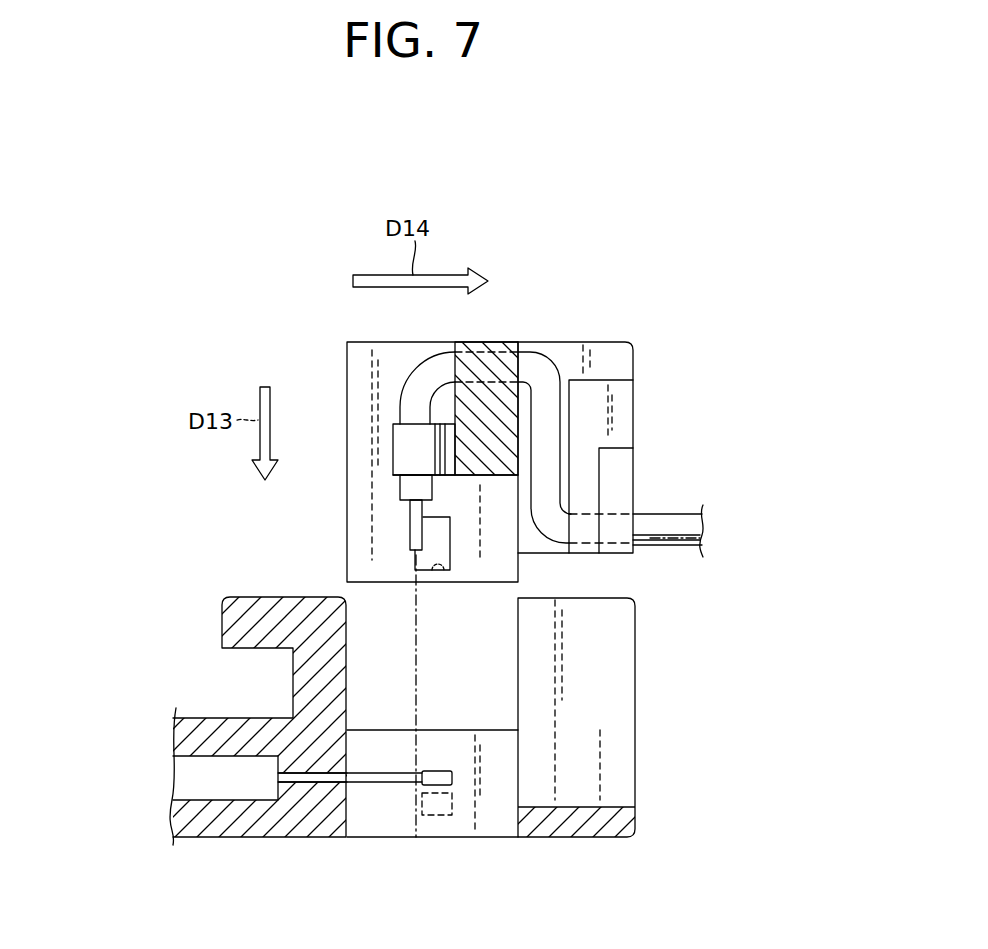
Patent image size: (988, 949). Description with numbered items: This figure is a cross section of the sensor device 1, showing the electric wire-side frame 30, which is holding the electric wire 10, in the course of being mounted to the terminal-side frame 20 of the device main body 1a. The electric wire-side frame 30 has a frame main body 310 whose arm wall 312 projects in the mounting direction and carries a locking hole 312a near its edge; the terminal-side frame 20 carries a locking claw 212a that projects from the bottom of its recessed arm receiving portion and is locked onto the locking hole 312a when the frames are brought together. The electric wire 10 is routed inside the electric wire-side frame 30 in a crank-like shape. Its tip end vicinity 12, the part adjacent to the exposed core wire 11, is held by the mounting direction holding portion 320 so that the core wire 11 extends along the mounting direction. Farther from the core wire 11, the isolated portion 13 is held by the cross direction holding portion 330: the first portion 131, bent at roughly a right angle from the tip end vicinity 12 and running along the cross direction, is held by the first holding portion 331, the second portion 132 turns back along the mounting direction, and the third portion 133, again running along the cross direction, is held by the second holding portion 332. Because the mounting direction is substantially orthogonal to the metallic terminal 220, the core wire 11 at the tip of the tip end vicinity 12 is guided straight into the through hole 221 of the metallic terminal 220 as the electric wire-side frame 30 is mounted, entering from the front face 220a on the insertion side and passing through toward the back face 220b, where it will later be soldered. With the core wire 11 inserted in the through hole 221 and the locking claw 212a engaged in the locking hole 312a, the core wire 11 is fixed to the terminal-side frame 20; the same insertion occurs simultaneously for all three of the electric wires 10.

The sensor device 1 is at (343, 162).
The device main body 1a is at (164, 492).
The electric wire 10 is at (682, 513).
The core wire 11 is at (407, 527).
The tip end vicinity 12 is at (410, 413).
The isolated portion 13 is at (559, 359).
The first portion 131 is at (528, 350).
The second portion 132 is at (562, 418).
The third portion 133 is at (638, 513).
The terminal-side frame 20 is at (247, 838).
The electric wire-side frame 30 is at (639, 422).
The frame main body 310 is at (622, 342).
The arm wall 312 is at (345, 352).
The locking hole 312a is at (445, 572).
The mounting direction holding portion 320 is at (405, 453).
The cross direction holding portion 330 is at (423, 406).
The first holding portion 331 is at (442, 339).
The second holding portion 332 is at (622, 535).
The locking claw 212a is at (440, 816).
The metallic terminal 220 is at (487, 748).
The front face 220a is at (380, 790).
The back face 220b is at (380, 790).
The through hole 221 is at (418, 765).